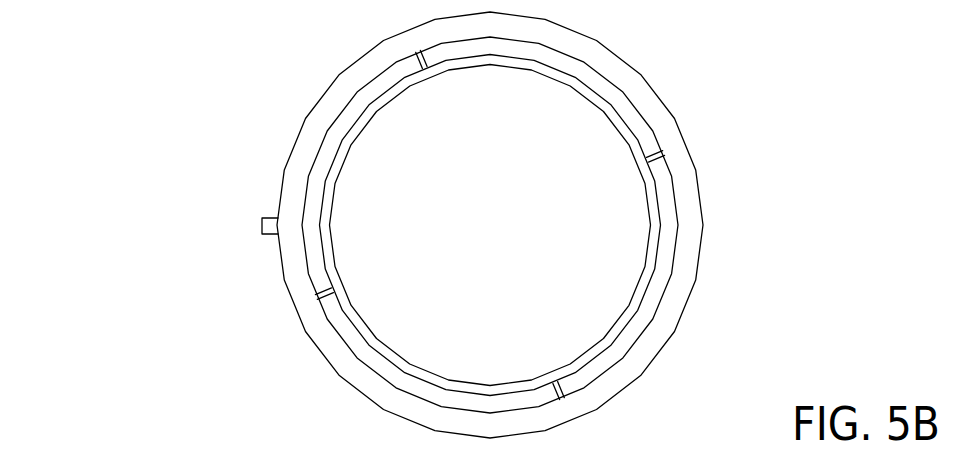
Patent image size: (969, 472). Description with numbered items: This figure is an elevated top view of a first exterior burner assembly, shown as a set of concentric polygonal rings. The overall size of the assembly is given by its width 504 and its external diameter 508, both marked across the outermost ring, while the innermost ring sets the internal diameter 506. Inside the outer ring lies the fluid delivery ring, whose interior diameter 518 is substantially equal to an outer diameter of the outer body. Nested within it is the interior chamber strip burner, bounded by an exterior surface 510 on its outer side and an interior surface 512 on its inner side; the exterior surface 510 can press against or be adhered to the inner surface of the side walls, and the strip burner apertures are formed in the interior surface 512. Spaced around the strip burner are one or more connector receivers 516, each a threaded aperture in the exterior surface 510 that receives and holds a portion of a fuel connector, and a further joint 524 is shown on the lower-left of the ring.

The width 504 is at (490, 437).
The external diameter 508 is at (366, 225).
The interior diameter 518 is at (490, 38).
The internal diameter 506 is at (490, 64).
The exterior surface 510 is at (631, 113).
The interior surface 512 is at (626, 120).
The connector receivers 516 is at (657, 164).
The joint of ring 524 is at (327, 300).